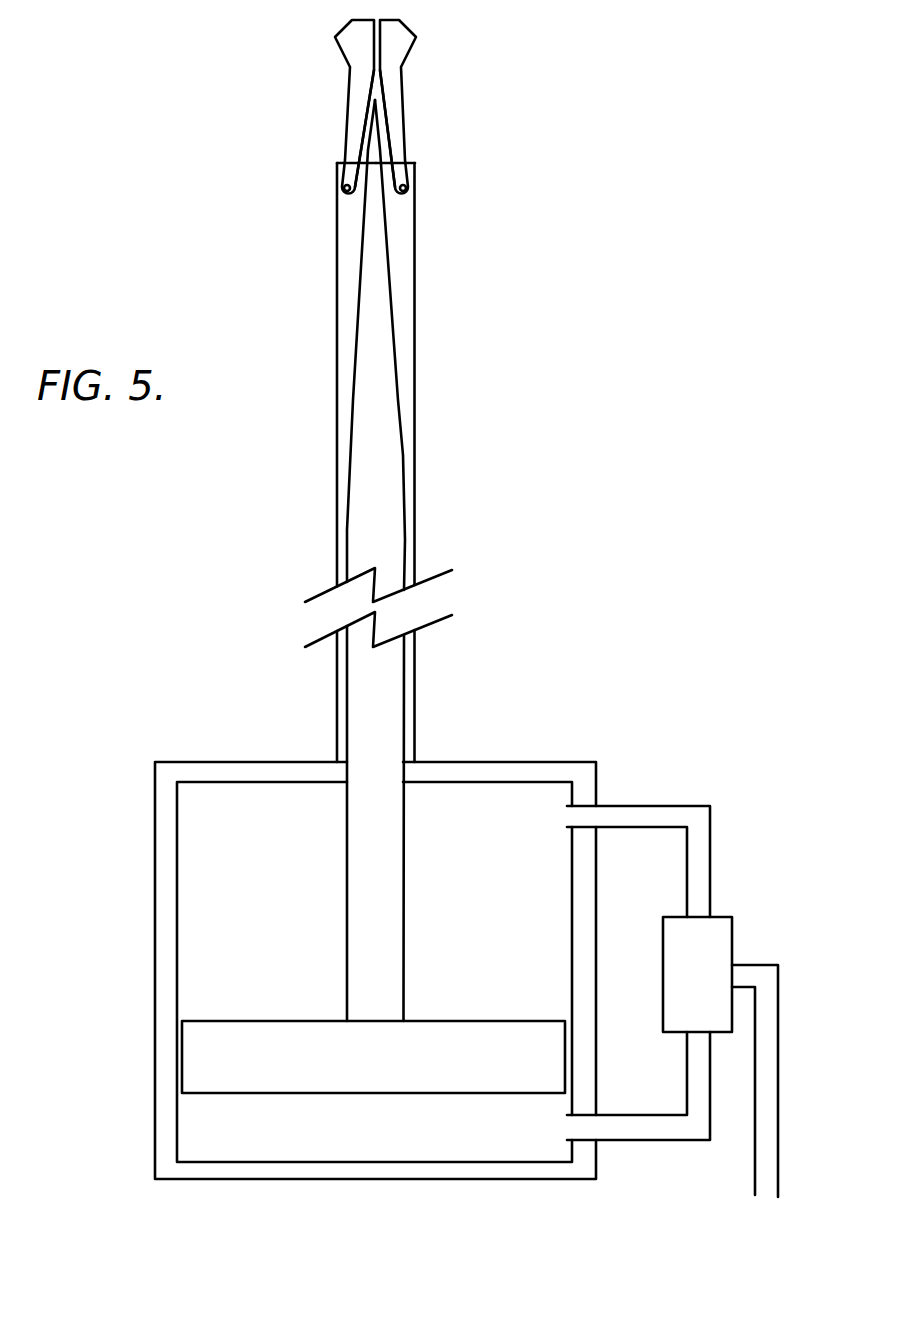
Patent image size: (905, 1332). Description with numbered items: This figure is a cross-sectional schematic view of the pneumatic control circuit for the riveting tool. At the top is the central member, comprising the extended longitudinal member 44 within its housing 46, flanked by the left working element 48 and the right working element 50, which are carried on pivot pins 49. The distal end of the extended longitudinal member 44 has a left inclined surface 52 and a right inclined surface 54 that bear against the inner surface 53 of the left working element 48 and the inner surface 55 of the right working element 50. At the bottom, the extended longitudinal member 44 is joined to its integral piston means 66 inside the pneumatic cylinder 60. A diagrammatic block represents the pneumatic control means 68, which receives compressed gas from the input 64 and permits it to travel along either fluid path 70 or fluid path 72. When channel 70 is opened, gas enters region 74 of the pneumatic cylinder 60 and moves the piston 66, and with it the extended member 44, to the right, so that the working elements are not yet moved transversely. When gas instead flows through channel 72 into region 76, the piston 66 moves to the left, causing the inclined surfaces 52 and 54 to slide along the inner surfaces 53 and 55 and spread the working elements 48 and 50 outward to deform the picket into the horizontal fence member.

The extended longitudinal member 44 is at (368, 476).
The housing 46 is at (432, 487).
The left working element 48 is at (360, 46).
The pivot pins 49 is at (342, 187).
The right working element 50 is at (412, 43).
The left inclined surface 52 is at (347, 290).
The inner surface of left working element 53 is at (368, 128).
The right inclined surface 54 is at (408, 292).
The inner surface of right working element 55 is at (385, 127).
The pneumatic cylinder 60 is at (497, 1190).
The input 64 is at (767, 1190).
The piston means 66 is at (222, 1059).
The pneumatic control means 68 is at (716, 997).
The fluid path 70 is at (657, 817).
The fluid path 72 is at (635, 1120).
The region of pneumatic cylinder 74 is at (502, 922).
The region of pneumatic cylinder 76 is at (498, 1151).